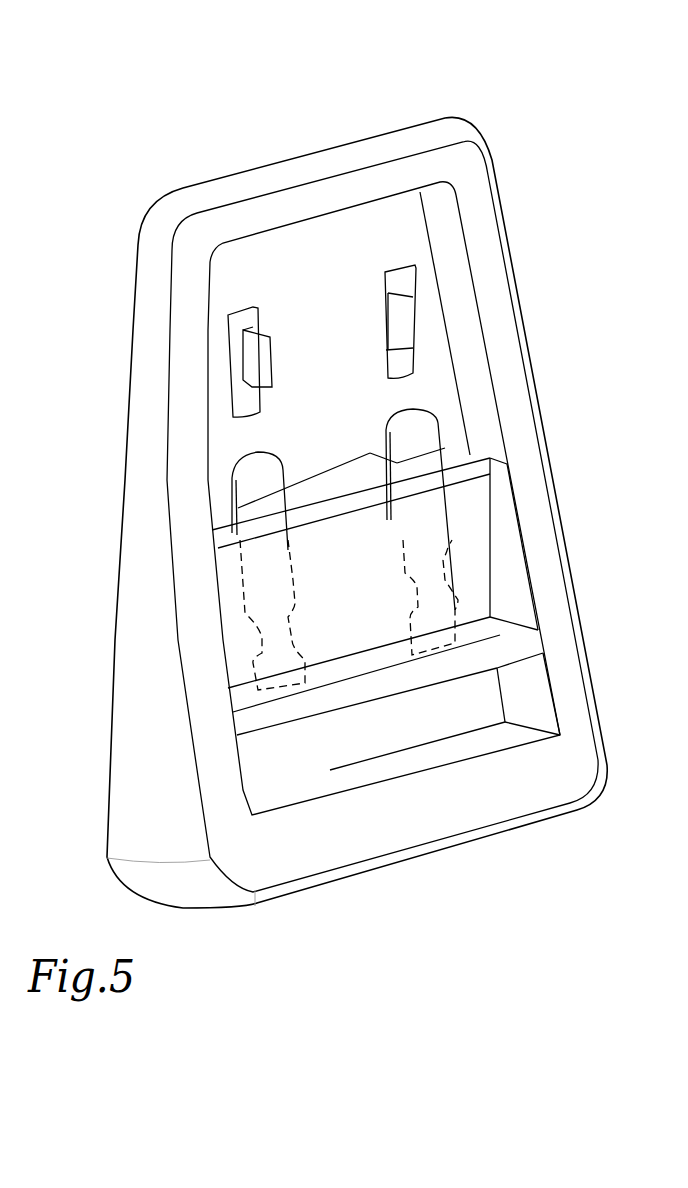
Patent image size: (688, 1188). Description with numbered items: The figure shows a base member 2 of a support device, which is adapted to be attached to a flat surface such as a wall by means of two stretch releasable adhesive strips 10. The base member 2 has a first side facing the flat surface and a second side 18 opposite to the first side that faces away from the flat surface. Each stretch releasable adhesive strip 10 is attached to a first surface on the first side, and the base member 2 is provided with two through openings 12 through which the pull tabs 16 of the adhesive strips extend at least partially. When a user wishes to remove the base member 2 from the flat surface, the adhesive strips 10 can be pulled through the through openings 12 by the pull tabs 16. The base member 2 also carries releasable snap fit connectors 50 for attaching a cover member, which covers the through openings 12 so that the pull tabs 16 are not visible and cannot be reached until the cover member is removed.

The base member 2 is at (96, 97).
The stretch releasable adhesive strip 10 is at (455, 545).
The through opening 12 is at (227, 505).
The pull tab 16 is at (268, 470).
The second side 18 is at (478, 568).
The releasable snap fit connector 50 is at (402, 317).